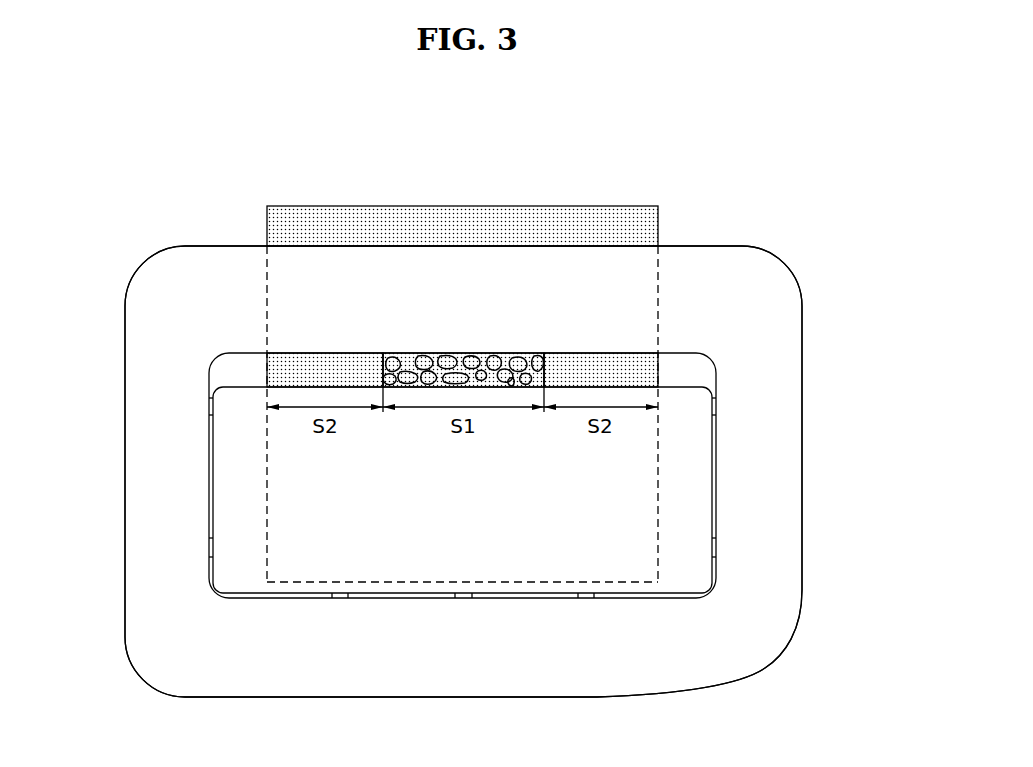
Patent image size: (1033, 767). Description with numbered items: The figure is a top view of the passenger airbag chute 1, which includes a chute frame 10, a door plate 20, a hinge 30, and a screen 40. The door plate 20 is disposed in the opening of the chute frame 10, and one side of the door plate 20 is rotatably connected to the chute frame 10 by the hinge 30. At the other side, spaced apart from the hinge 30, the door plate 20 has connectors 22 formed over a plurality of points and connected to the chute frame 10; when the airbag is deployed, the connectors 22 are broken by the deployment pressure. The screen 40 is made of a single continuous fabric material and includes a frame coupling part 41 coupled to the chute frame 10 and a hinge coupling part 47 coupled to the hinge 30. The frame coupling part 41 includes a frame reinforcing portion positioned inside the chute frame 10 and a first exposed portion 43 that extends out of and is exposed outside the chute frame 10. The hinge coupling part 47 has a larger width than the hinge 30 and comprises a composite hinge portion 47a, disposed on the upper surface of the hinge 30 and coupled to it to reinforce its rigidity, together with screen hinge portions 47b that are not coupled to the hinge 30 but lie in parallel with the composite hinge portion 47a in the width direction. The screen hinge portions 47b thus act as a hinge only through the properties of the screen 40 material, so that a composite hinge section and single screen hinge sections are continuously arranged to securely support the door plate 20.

The passenger airbag chute 1 is at (736, 88).
The chute frame 10 is at (770, 423).
The door plate 20 is at (459, 475).
The connectors 22 is at (211, 550).
The hinge 30 is at (547, 360).
The screen 40 is at (354, 239).
The frame coupling part 41 is at (462, 186).
The first exposed portion 43 is at (487, 218).
The hinge coupling part 47 is at (462, 239).
The composite hinge portion 47a is at (405, 368).
The screen hinge portions 47b is at (318, 367).